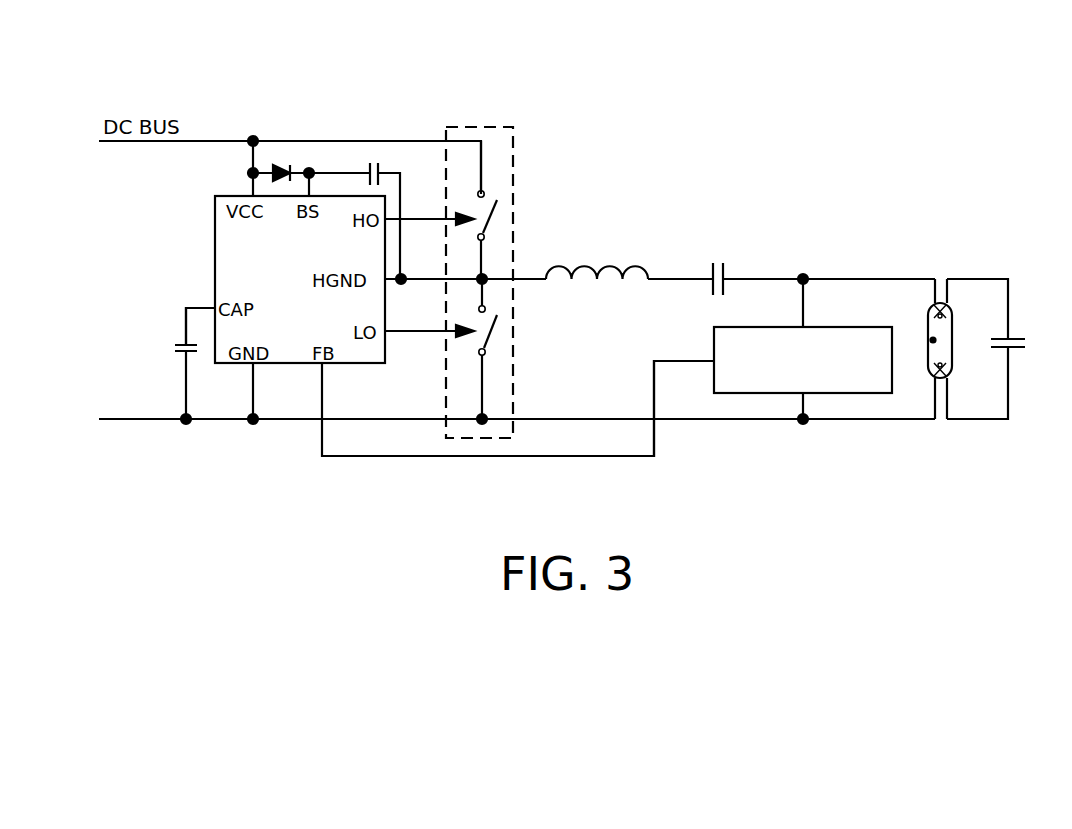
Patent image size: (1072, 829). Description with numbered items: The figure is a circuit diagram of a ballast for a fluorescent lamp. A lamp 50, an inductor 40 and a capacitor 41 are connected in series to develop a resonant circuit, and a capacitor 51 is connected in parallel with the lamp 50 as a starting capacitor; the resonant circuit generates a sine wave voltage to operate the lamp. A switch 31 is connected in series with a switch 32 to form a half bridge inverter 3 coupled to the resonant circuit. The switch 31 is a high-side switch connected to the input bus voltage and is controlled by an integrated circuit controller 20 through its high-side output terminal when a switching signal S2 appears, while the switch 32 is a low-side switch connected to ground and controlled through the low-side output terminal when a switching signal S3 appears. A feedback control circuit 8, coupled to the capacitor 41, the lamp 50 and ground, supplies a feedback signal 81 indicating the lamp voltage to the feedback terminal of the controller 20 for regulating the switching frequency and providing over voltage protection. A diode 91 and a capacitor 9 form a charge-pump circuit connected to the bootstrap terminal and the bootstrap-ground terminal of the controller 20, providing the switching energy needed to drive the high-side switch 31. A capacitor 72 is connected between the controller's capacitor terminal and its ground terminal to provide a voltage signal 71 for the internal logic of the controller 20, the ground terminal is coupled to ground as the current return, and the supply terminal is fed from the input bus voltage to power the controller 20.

The half bridge inverter 3 is at (518, 161).
The feedback control circuit 8 is at (830, 326).
The capacitor 9 is at (382, 172).
The integrated circuit controller 20 is at (213, 237).
The switch 31 is at (500, 212).
The switch 32 is at (500, 336).
The inductor 40 is at (612, 263).
The capacitor 41 is at (730, 271).
The lamp 50 is at (928, 350).
The capacitor 51 is at (1018, 335).
The voltage signal 71 is at (206, 307).
The capacitor 72 is at (182, 344).
The feedback signal 81 is at (687, 359).
The diode 91 is at (293, 172).
The switching signal S2 is at (437, 217).
The switching signal S3 is at (416, 333).